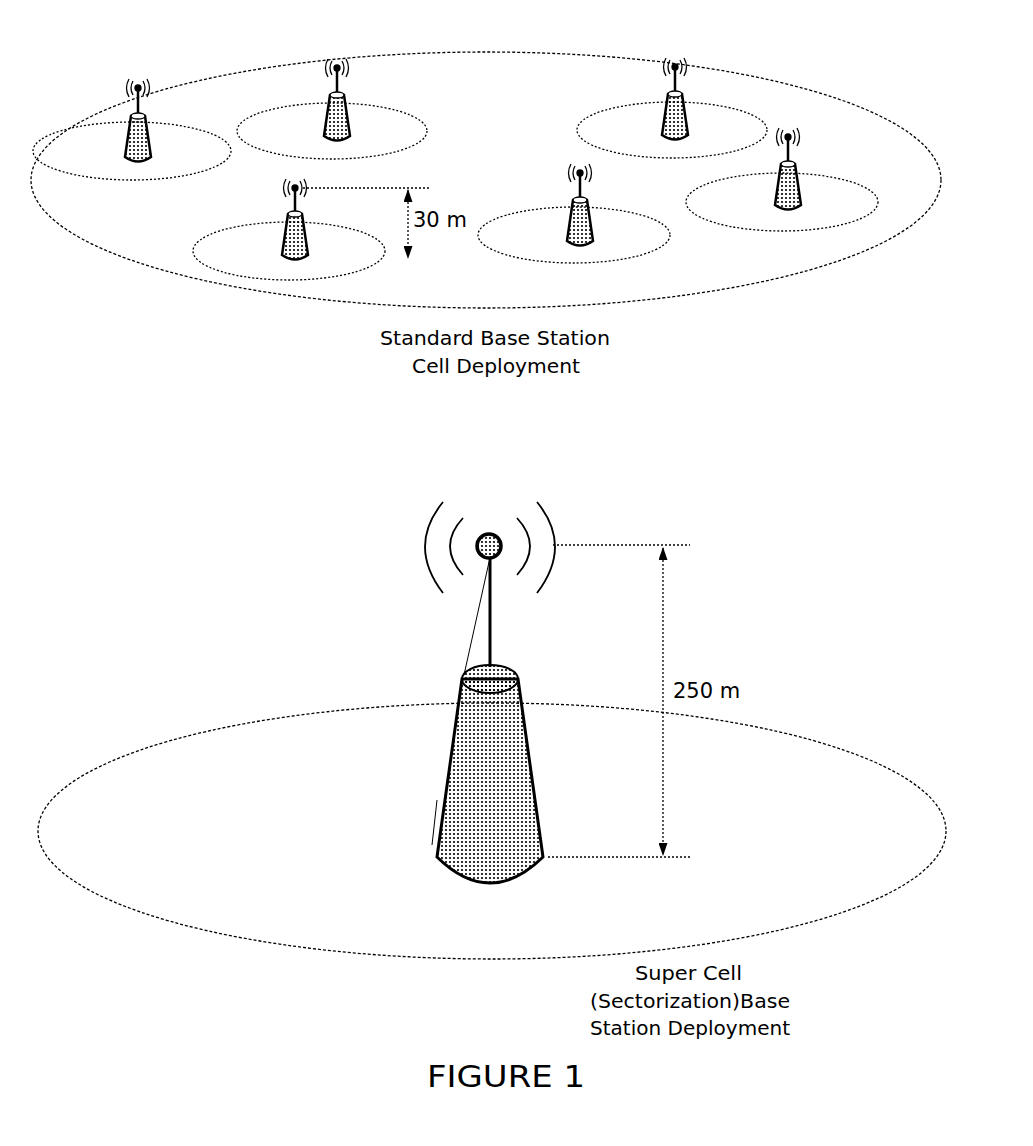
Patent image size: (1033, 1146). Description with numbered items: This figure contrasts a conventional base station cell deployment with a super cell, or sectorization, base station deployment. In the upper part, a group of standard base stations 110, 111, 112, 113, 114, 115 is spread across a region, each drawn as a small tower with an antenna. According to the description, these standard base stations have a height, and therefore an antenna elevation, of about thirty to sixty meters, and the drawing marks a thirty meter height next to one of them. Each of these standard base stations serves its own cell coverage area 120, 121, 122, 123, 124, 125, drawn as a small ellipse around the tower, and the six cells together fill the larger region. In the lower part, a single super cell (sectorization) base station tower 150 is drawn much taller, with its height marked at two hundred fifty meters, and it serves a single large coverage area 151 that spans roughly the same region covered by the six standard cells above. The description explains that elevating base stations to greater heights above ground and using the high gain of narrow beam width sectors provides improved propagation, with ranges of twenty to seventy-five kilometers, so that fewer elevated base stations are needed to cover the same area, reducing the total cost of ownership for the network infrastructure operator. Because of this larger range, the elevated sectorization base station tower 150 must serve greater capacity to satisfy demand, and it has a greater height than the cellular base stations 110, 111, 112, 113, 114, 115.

The standard base station 110 is at (145, 114).
The standard base station 111 is at (343, 96).
The standard base station 112 is at (290, 214).
The standard base station 113 is at (575, 201).
The standard base station 114 is at (668, 97).
The standard base station 115 is at (795, 166).
The cell coverage area 120 is at (167, 163).
The cell coverage area 121 is at (404, 131).
The cell coverage area 122 is at (220, 248).
The cell coverage area 123 is at (526, 258).
The cell coverage area 124 is at (610, 127).
The cell coverage area 125 is at (766, 220).
The super cell (sectorization) base station tower 150 is at (483, 689).
The coverage area 151 is at (238, 879).